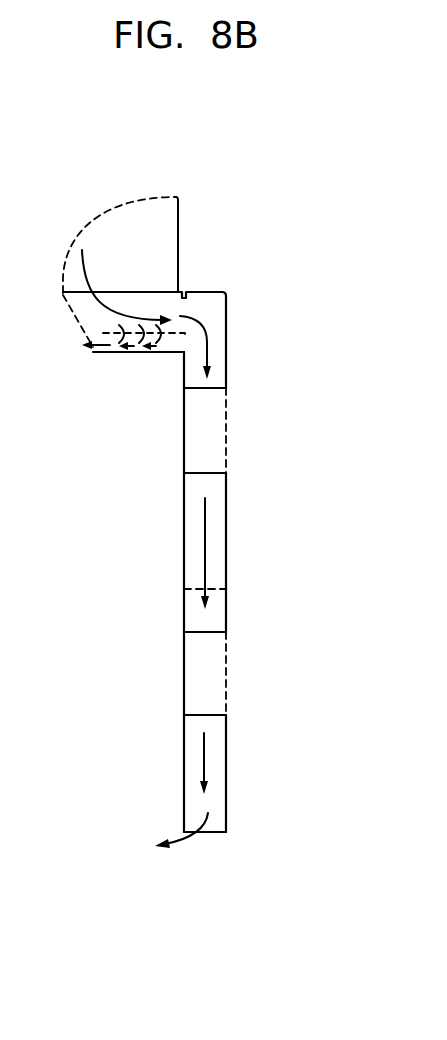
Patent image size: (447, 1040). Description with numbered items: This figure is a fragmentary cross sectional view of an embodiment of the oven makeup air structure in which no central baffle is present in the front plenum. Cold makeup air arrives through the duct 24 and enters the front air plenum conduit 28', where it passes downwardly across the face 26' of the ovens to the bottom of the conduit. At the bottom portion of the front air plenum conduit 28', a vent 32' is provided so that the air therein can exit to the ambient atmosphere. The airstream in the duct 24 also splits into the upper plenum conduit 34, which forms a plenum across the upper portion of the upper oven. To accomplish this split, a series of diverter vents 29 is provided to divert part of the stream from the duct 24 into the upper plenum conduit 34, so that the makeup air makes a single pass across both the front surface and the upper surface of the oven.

The duct 24 is at (143, 213).
The diverter vents 29 is at (160, 320).
The upper plenum conduit 34 is at (96, 353).
The front air plenum conduit 28' is at (246, 592).
The face of the ovens 26' is at (252, 572).
The vent 32' is at (225, 845).